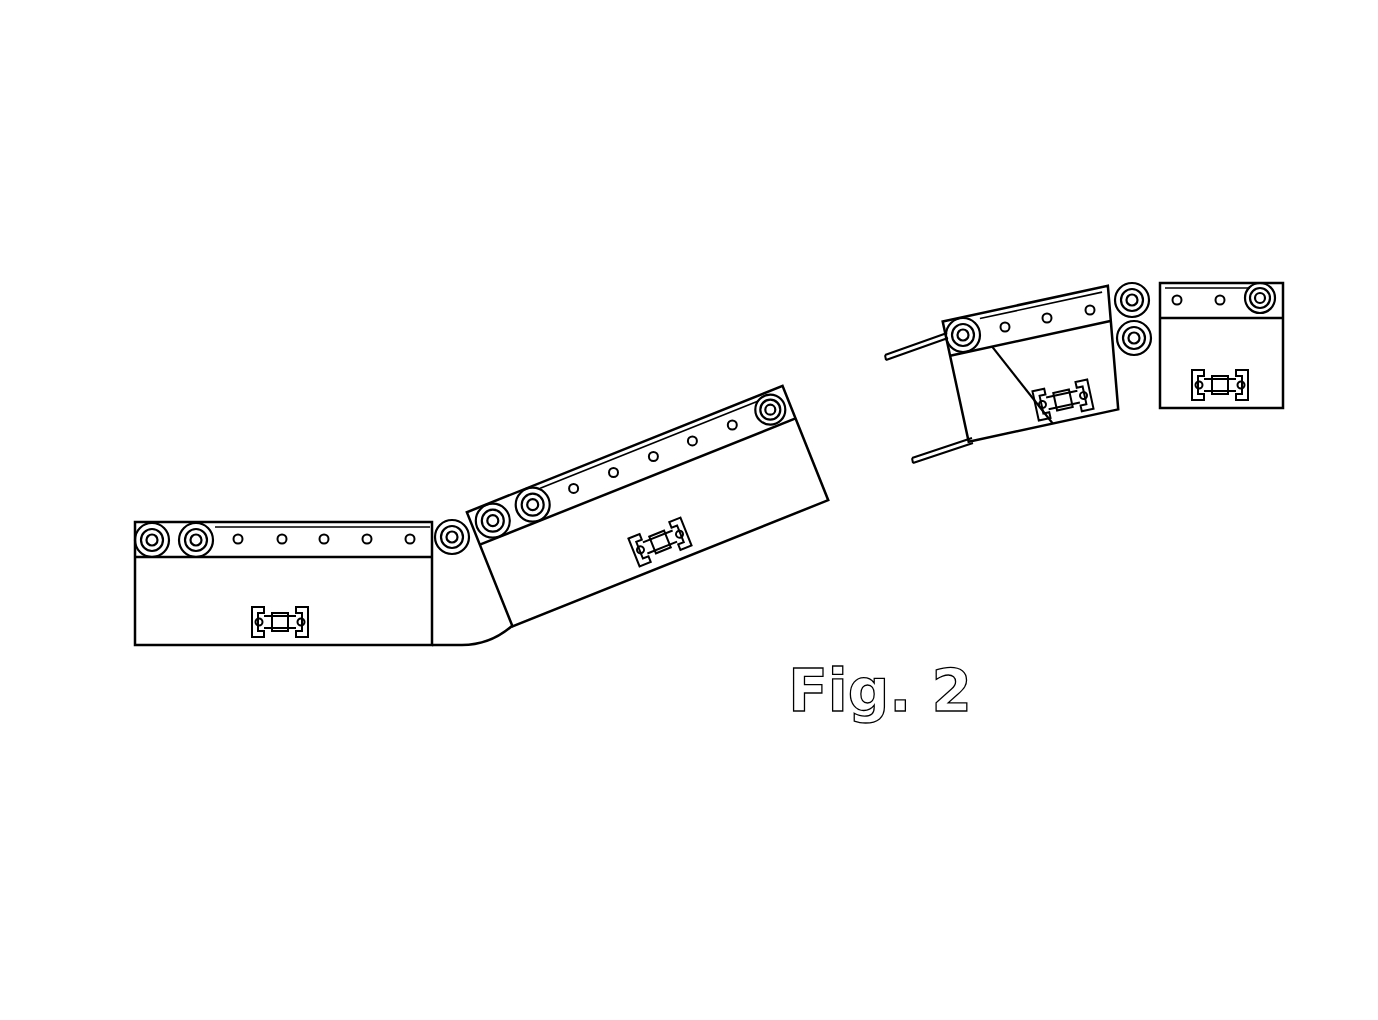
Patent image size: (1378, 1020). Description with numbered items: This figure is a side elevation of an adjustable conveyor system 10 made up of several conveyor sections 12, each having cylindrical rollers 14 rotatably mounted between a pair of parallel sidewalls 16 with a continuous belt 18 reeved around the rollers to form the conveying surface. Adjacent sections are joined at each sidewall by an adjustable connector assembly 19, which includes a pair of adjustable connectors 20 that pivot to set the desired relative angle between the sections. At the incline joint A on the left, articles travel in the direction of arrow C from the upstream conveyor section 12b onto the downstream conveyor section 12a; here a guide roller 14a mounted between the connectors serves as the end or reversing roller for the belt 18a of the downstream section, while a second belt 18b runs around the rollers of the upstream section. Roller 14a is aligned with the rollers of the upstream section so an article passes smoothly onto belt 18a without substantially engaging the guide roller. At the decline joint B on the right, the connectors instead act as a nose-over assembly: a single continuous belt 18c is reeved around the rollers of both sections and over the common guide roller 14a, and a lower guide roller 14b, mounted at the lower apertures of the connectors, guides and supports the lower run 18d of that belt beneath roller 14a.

The adjustable conveyor system 10 is at (596, 317).
The conveyor section 12 is at (327, 477).
The downstream conveyor section 12a is at (218, 660).
The upstream conveyor section 12b is at (601, 600).
The roller 14 is at (150, 522).
The guide roller 14a is at (455, 520).
The lower guide roller 14b is at (1130, 357).
The sidewall 16 is at (330, 645).
The continuous belt 18 is at (345, 515).
The belt of downstream conveyor section 18a is at (378, 518).
The belt of upstream conveyor section 18b is at (622, 447).
The single continuous conveyor belt 18c is at (1055, 300).
The lower run of belt 18d is at (1013, 432).
The adjustable connector assembly 19 is at (427, 600).
The adjustable connector 20 is at (481, 647).
The incline joint A is at (449, 458).
The decline joint B is at (1134, 258).
The direction of conveyance C is at (302, 497).